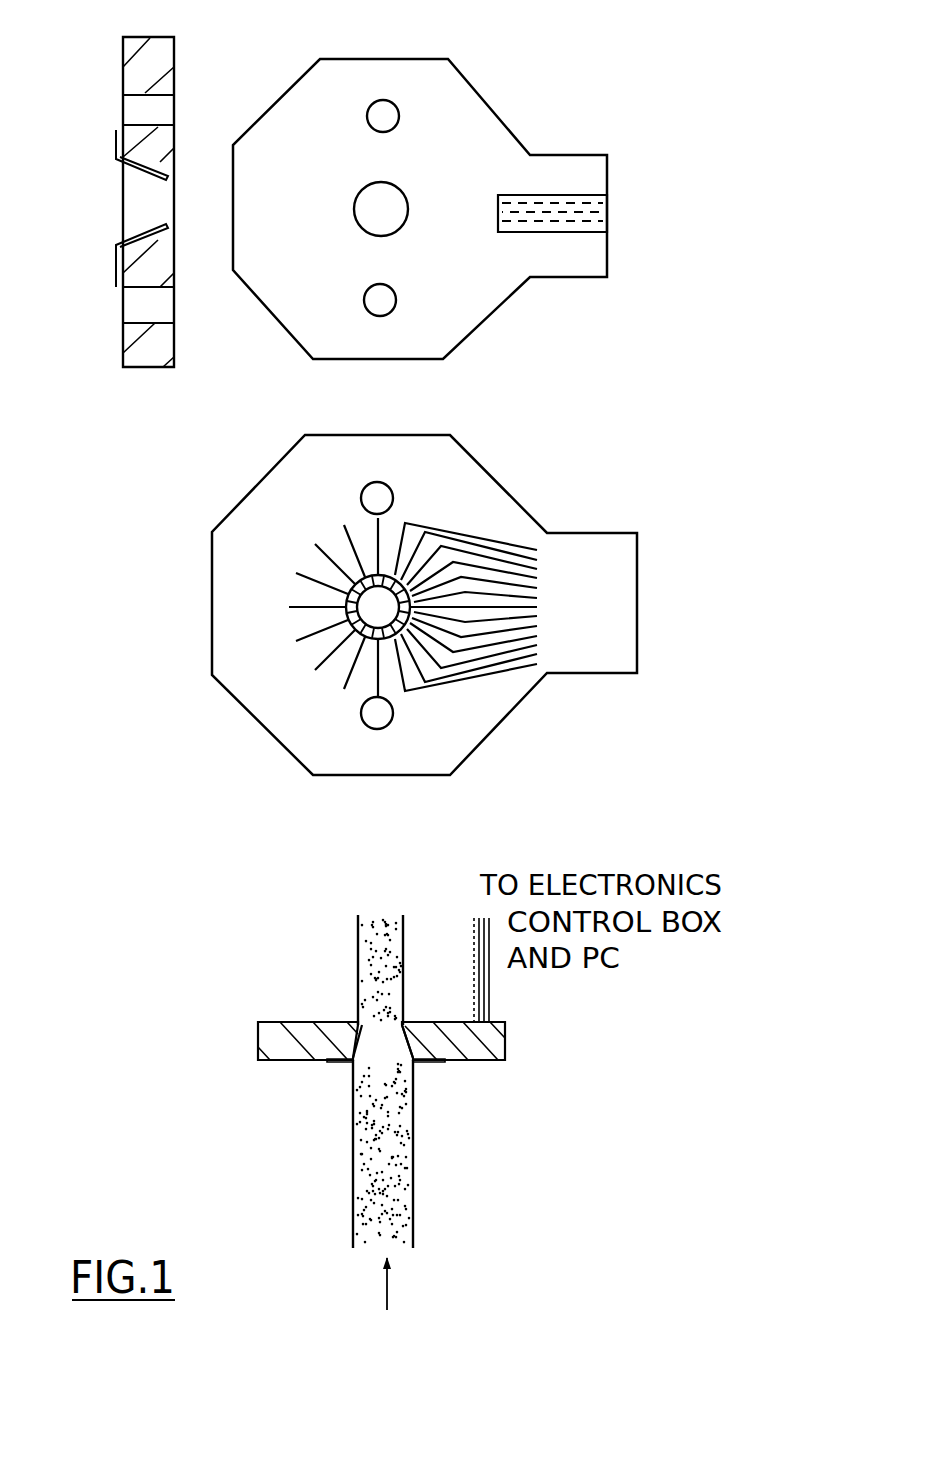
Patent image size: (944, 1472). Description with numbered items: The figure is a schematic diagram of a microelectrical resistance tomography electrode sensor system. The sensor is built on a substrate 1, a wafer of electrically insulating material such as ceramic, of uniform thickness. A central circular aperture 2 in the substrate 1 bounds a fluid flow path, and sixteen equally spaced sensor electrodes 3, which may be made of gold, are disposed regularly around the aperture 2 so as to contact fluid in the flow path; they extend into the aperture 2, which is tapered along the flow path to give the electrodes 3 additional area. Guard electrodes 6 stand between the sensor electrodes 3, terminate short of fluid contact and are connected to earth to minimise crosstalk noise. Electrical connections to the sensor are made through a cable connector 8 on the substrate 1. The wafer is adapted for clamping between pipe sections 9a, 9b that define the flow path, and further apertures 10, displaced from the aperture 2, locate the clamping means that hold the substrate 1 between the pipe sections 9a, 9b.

The substrate 1 is at (463, 110).
The aperture 2 is at (100, 260).
The sensor electrodes 3 is at (151, 226).
The guard electrodes 6 is at (458, 551).
The cable connector 8 is at (566, 191).
The pipe section 9a is at (357, 937).
The pipe section 9b is at (353, 1117).
The apertures 10 is at (375, 86).